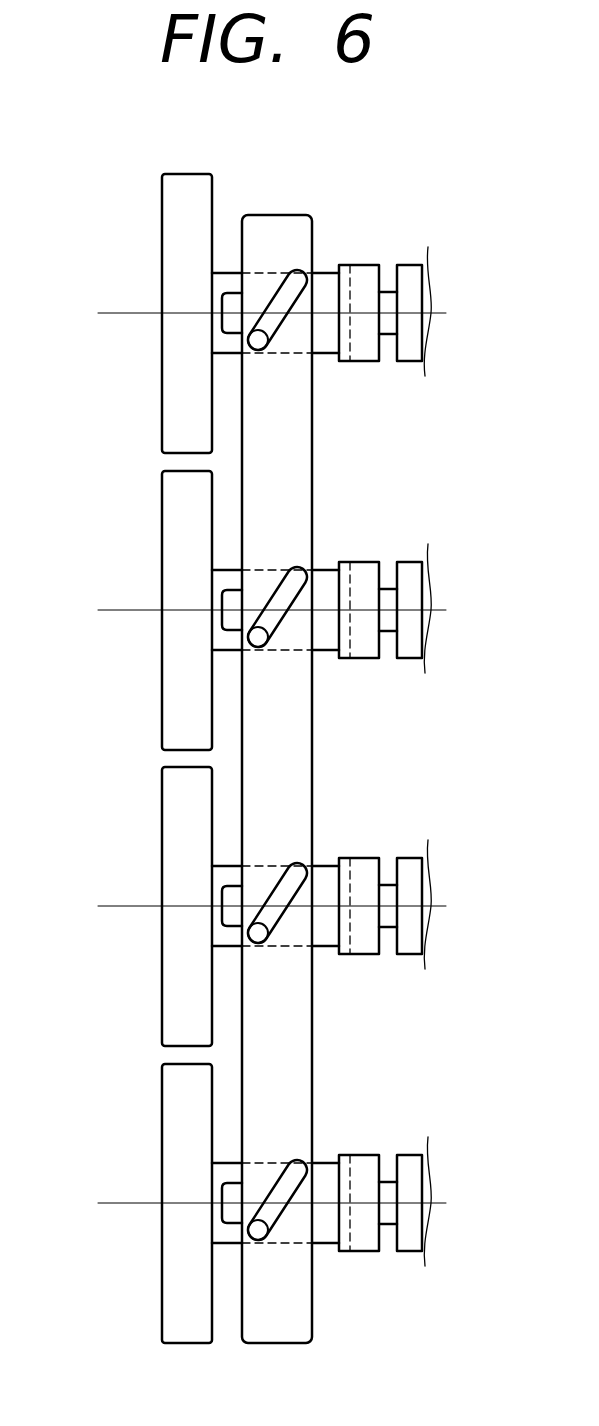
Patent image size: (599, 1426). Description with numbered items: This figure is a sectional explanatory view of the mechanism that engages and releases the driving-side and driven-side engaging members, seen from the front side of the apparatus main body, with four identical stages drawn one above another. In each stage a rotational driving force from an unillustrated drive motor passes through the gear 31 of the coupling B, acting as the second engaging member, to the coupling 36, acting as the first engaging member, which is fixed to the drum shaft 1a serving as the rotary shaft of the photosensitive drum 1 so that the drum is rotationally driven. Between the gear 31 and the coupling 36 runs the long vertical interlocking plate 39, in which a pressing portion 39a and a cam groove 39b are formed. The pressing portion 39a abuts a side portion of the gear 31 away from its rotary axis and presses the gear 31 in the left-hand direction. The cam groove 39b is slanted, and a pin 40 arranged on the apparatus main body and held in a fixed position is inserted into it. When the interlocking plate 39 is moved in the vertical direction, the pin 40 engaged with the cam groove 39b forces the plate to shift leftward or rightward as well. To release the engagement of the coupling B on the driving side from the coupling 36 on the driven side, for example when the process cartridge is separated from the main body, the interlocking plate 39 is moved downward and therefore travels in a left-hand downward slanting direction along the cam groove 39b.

The photosensitive drum 1 is at (289, 756).
The drum shaft 1a is at (411, 727).
The gear 31 is at (147, 758).
The coupling 36 is at (355, 709).
The interlocking plate 39 is at (284, 238).
The pressing portion 39a is at (164, 776).
The cam groove 39b is at (334, 793).
The pin 40 is at (309, 837).
The coupling B is at (126, 637).